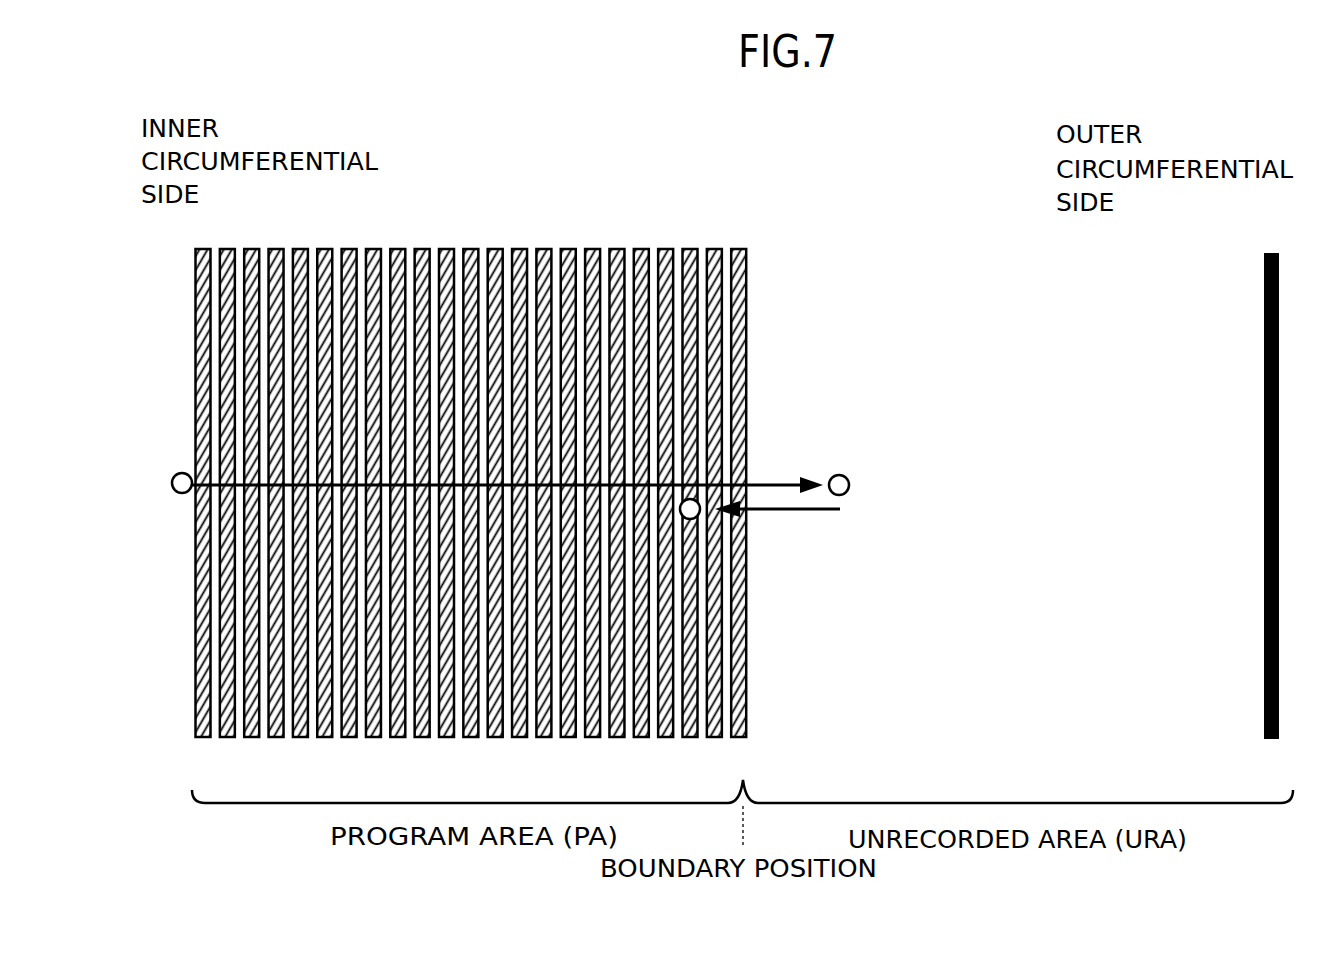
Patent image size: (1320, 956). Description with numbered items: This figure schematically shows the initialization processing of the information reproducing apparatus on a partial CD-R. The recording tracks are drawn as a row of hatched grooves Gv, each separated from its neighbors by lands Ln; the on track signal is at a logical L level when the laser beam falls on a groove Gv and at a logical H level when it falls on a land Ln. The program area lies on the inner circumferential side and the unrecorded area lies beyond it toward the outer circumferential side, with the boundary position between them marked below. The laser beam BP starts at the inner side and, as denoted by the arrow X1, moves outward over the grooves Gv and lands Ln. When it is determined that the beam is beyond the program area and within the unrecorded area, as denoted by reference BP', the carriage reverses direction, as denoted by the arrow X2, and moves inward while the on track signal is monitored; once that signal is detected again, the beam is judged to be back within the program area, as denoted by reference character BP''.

The groove Gv is at (477, 475).
The land Ln is at (469, 761).
The laser beam BP is at (166, 460).
The laser beam position beyond the program area BP' is at (848, 458).
The laser beam position within the program area BP'' is at (741, 575).
The outward movement arrow X1 is at (783, 482).
The inward movement arrow X2 is at (778, 513).